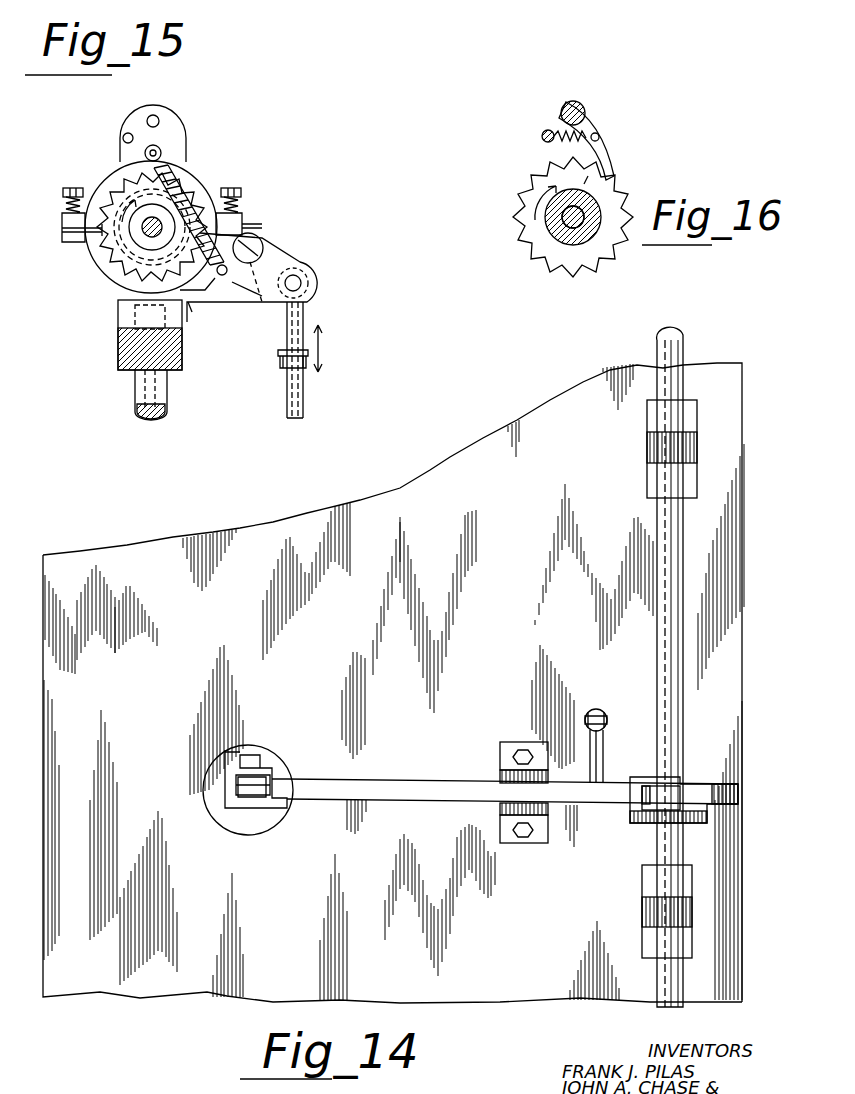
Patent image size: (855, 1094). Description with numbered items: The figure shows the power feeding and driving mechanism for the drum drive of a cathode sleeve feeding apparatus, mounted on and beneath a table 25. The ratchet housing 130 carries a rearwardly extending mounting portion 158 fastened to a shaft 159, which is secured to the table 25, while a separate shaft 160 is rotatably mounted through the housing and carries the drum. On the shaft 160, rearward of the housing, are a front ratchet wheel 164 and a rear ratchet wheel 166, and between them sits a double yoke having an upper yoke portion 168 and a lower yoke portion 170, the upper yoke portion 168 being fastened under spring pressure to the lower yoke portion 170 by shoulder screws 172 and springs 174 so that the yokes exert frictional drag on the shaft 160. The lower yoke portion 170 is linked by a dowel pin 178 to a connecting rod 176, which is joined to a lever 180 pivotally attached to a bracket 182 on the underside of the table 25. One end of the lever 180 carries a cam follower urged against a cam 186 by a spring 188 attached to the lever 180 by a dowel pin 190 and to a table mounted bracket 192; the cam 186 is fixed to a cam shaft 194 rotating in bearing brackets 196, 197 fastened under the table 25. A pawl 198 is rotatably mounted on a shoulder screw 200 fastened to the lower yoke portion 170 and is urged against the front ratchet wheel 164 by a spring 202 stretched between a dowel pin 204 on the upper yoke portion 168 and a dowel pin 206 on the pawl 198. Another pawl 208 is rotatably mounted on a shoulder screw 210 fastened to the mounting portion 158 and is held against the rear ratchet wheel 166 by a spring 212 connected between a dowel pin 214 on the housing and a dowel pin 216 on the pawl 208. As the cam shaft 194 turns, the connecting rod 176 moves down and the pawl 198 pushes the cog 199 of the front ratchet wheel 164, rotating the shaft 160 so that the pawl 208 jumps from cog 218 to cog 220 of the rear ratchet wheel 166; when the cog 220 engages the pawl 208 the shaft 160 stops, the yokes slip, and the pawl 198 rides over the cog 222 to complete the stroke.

In FIG. 14, the table 25 is at (442, 460).
In FIG. 14, the ratchet housing 130 is at (254, 752).
In FIG. 15, the rearwardly extending mounting portion 158 is at (118, 358).
In FIG. 15, the shaft 159 is at (135, 405).
In FIG. 15, the shaft 160 is at (152, 236).
In FIG. 16, the shaft 160 is at (580, 222).
In FIG. 15, the front ratchet wheel 164 is at (110, 262).
In FIG. 16, the rear ratchet wheel 166 is at (540, 268).
In FIG. 15, the upper yoke portion 168 is at (190, 178).
In FIG. 15, the lower yoke portion 170 is at (286, 262).
In FIG. 15, the shoulder screws 172 is at (70, 188).
In FIG. 15, the springs 174 is at (62, 205).
In FIG. 15, the connecting rod 176 is at (303, 401).
In FIG. 14, the connecting rod 176 is at (235, 793).
In FIG. 15, the dowel pin 178 is at (302, 281).
In FIG. 14, the lever 180 is at (405, 780).
In FIG. 14, the bracket 182 is at (512, 742).
In FIG. 14, the cam 186 is at (702, 782).
In FIG. 14, the spring 188 is at (601, 712).
In FIG. 14, the dowel pin 190 is at (603, 754).
In FIG. 14, the table mounted bracket 192 is at (586, 714).
In FIG. 14, the cam shaft 194 is at (683, 722).
In FIG. 14, the bearing bracket 196 is at (697, 426).
In FIG. 14, the bearing bracket 197 is at (642, 932).
In FIG. 15, the pawl 198 is at (200, 290).
In FIG. 15, the cog 199 is at (196, 302).
In FIG. 15, the shoulder screw 200 is at (250, 242).
In FIG. 15, the spring 202 is at (192, 205).
In FIG. 15, the dowel pin 204 is at (162, 151).
In FIG. 15, the dowel pin 206 is at (238, 286).
In FIG. 16, the pawl 208 is at (596, 120).
In FIG. 16, the shoulder screw 210 is at (578, 102).
In FIG. 16, the spring 212 is at (556, 143).
In FIG. 16, the dowel pin 214 is at (552, 130).
In FIG. 16, the dowel pin 216 is at (600, 135).
In FIG. 16, the cog 218 is at (612, 172).
In FIG. 16, the cog 220 is at (567, 192).
In FIG. 15, the cog 222 is at (222, 276).